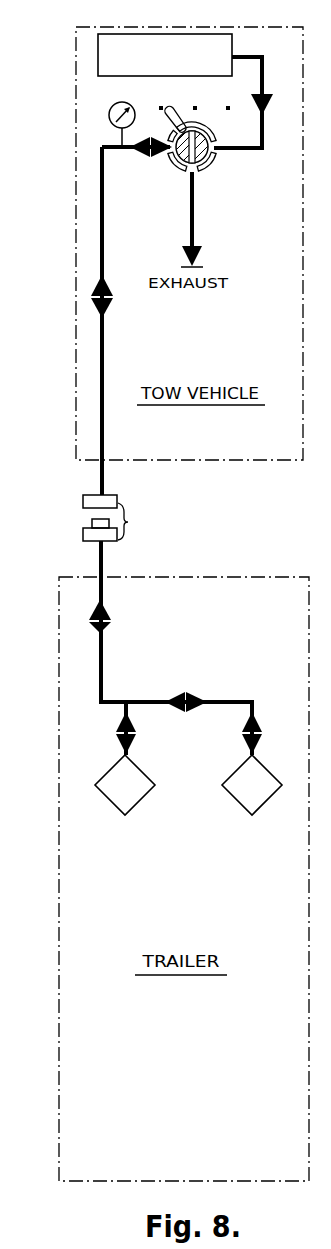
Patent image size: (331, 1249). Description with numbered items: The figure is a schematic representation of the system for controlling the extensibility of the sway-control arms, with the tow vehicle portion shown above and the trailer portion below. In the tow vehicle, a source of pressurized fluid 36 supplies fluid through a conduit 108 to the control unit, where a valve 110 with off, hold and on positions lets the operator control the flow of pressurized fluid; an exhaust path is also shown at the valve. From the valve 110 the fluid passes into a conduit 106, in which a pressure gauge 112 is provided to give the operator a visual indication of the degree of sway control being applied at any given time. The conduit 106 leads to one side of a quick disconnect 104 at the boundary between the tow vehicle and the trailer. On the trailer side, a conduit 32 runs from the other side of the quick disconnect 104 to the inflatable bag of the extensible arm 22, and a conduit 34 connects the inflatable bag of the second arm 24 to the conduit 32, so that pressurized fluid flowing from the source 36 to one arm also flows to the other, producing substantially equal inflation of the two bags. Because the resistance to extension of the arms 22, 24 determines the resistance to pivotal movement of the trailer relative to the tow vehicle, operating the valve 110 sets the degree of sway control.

The source of pressurized fluid 36 is at (236, 47).
The conduit 108 is at (263, 79).
The valve 110 is at (212, 163).
The pressure gauge 112 is at (115, 104).
The conduit 106 is at (104, 226).
The quick disconnect 104 is at (74, 520).
The conduit 34 is at (226, 701).
The conduit 32 is at (131, 733).
The extensible arm 22 is at (135, 798).
The second arm 24 is at (262, 798).